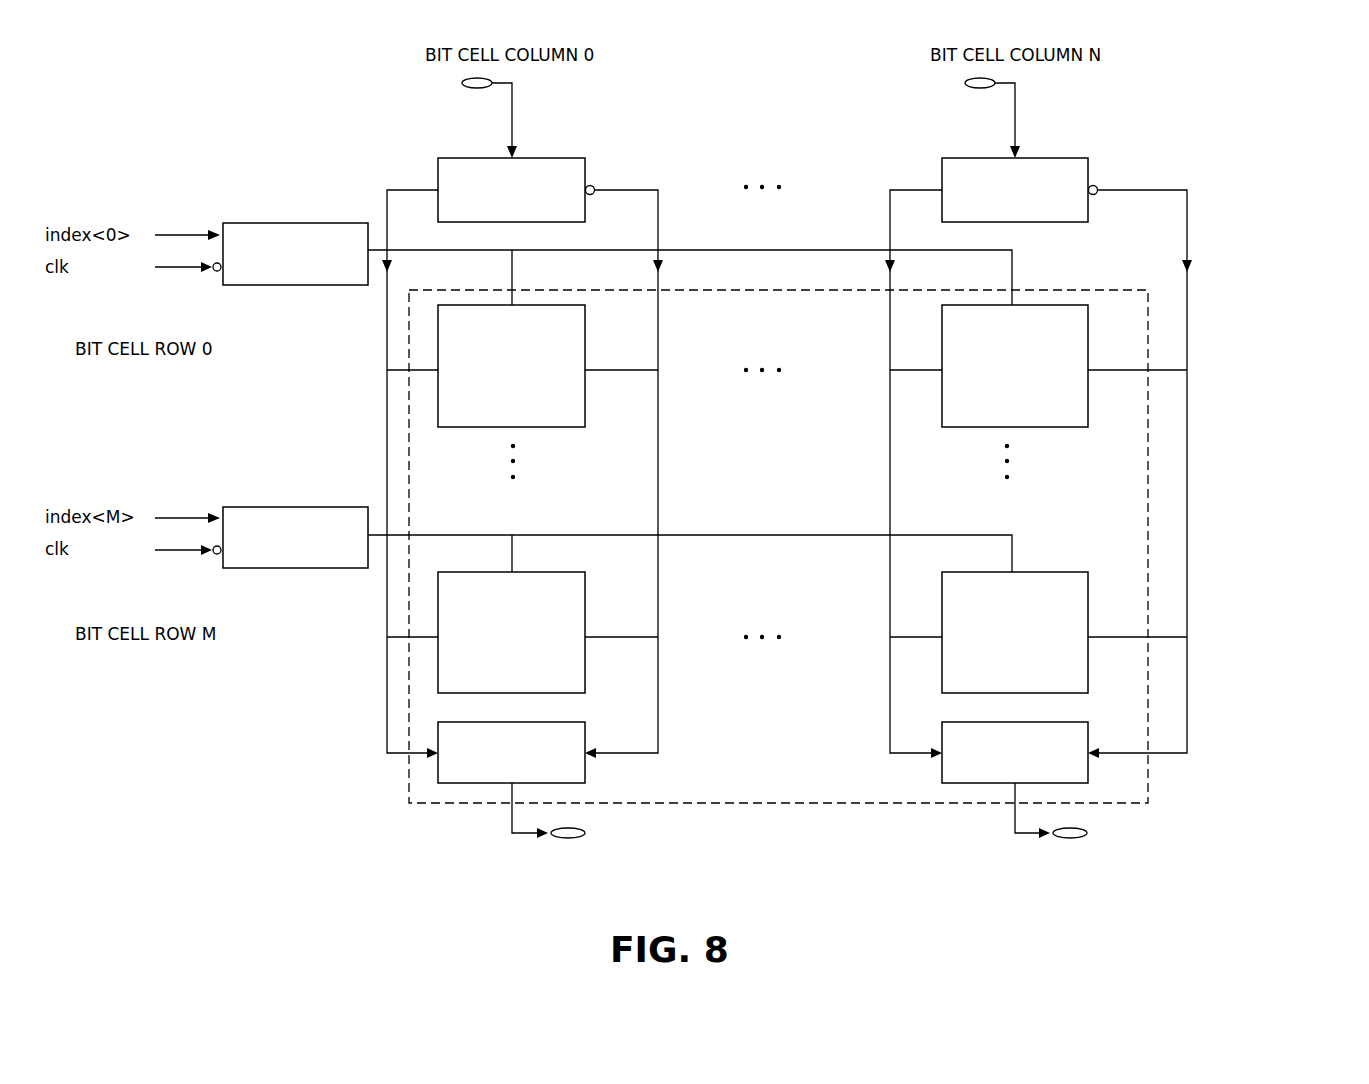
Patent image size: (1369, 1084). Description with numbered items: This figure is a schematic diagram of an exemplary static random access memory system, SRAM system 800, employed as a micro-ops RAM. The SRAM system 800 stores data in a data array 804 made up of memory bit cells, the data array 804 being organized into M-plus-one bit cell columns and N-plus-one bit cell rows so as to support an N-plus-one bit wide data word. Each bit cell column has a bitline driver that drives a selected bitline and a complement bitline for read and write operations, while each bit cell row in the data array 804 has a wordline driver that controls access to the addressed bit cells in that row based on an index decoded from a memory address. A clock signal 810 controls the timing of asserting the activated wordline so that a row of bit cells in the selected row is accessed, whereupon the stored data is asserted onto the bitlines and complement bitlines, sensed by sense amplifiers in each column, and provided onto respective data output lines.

The SRAM system 800 is at (1192, 68).
The data array 804 is at (1148, 333).
The clock signal 810 is at (175, 272).